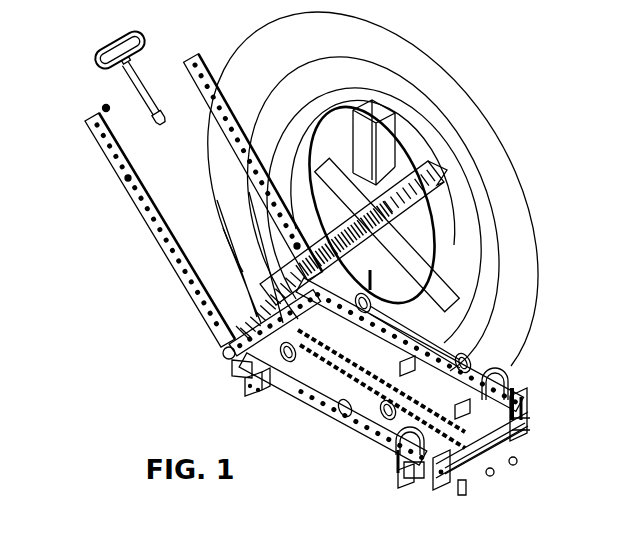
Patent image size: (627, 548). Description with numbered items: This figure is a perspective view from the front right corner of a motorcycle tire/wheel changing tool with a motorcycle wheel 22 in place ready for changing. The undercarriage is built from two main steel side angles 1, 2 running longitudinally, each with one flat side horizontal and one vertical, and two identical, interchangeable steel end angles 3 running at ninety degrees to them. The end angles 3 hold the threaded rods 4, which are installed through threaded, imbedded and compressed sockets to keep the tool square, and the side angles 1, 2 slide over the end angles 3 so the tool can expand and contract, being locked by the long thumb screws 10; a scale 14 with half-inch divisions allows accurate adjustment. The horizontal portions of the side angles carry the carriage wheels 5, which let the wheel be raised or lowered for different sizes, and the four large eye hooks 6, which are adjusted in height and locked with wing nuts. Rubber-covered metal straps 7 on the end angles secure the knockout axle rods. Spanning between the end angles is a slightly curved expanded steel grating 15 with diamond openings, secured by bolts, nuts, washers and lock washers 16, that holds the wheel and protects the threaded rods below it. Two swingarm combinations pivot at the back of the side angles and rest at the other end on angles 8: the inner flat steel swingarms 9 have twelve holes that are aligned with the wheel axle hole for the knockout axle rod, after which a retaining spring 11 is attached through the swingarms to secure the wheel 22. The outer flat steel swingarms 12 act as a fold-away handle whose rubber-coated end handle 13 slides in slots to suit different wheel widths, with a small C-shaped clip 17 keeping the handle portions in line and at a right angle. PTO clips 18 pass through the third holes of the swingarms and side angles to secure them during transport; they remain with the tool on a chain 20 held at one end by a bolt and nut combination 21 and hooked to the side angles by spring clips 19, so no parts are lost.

The steel side angle 1 is at (302, 392).
The steel side angle 2 is at (528, 404).
The steel end angle 3 is at (435, 485).
The threaded rod 4 is at (516, 463).
The carriage wheel 5 is at (482, 405).
The eye hook 6 is at (440, 385).
The metal strap with rubber covering 7 is at (510, 452).
The steel angle 8 is at (513, 387).
The inner flat steel swingarm 9 is at (440, 163).
The long thumb screw 10 is at (370, 278).
The retaining spring 11 is at (420, 247).
The flat steel swingarm 12 is at (108, 152).
The end handle 13 is at (95, 50).
The scale 14 is at (447, 460).
The expanded steel grating 15 is at (340, 412).
The bolts, nuts, washers, and lock washers 16 is at (523, 433).
The C-shaped clip 17 is at (104, 107).
The PTO clip 18 is at (490, 373).
The spring clip 19 is at (403, 468).
The chain 20 is at (340, 420).
The bolt and nut combination 21 is at (423, 328).
The motorcycle tire/wheel 22 is at (455, 98).